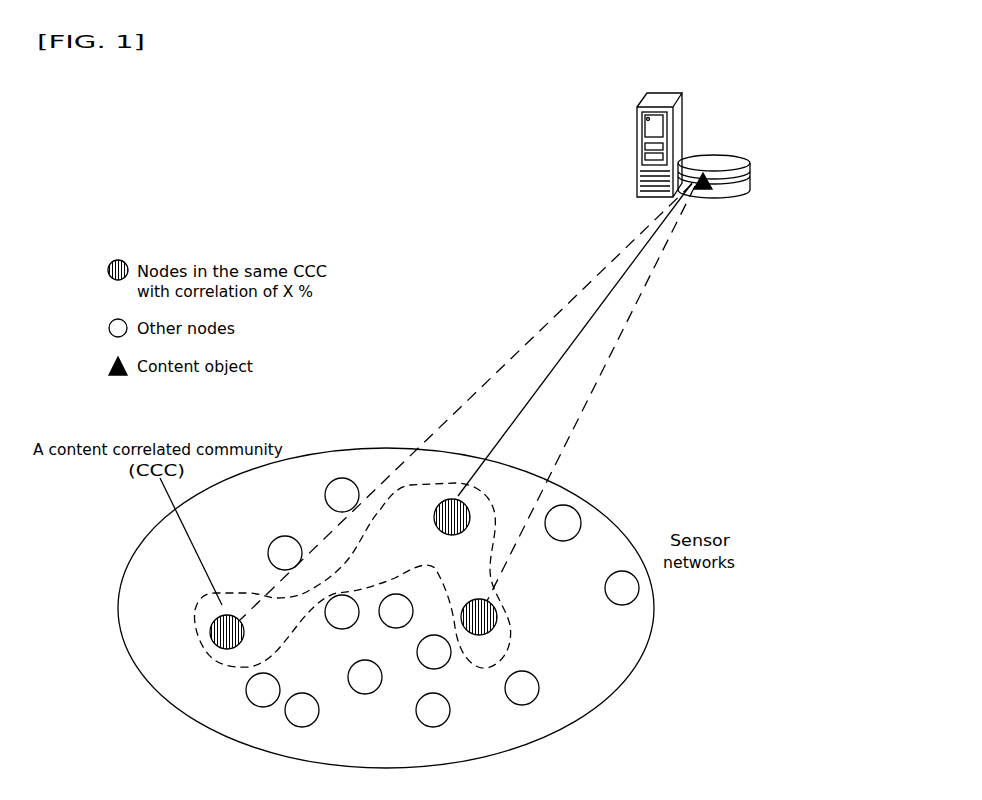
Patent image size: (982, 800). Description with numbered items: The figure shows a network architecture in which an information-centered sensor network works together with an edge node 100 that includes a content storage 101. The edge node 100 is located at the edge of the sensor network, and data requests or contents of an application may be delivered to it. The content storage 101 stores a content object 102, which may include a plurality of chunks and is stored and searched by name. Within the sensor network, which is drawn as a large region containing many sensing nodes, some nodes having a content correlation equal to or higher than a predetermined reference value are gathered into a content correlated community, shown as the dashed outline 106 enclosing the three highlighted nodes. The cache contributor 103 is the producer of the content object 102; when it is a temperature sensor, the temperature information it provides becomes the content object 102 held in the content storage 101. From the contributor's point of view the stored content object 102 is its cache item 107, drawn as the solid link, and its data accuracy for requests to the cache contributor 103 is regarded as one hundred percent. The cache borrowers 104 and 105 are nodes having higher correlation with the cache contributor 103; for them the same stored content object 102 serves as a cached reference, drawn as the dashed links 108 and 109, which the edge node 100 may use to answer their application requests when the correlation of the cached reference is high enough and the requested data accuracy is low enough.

The edge node 100 is at (637, 114).
The content storage 101 is at (750, 168).
The content object 102 is at (713, 187).
The cache contributor 103 is at (470, 520).
The cache borrower 104 is at (497, 617).
The cache borrower 105 is at (210, 633).
The content correlated community (CCC) 106 is at (248, 593).
The cache item 107 is at (508, 427).
The cached reference (X%) 108 is at (491, 382).
The cached reference (X%) 109 is at (558, 456).